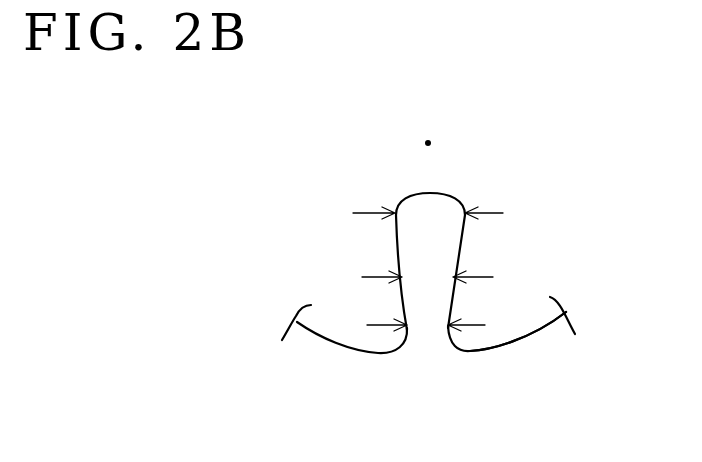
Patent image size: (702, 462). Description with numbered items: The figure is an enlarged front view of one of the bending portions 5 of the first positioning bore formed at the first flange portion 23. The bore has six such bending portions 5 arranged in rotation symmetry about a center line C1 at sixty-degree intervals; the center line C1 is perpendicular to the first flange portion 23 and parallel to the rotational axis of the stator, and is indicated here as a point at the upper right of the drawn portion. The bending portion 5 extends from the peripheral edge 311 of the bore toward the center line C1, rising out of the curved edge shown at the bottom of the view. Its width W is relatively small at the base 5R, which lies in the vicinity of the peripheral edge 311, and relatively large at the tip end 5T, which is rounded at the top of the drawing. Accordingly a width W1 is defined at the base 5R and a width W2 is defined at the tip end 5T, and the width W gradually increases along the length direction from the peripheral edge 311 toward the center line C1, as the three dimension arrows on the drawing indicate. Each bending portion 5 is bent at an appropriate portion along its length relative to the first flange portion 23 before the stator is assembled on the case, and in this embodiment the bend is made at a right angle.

The bending portion 5 is at (378, 227).
The tip end 5T is at (427, 207).
The base 5R is at (425, 335).
The first flange portion 23 is at (447, 400).
The peripheral edge 311 is at (462, 351).
The center line C1 is at (428, 141).
The width W is at (444, 276).
The width at the base W1 is at (451, 324).
The width at the tip end W2 is at (453, 212).